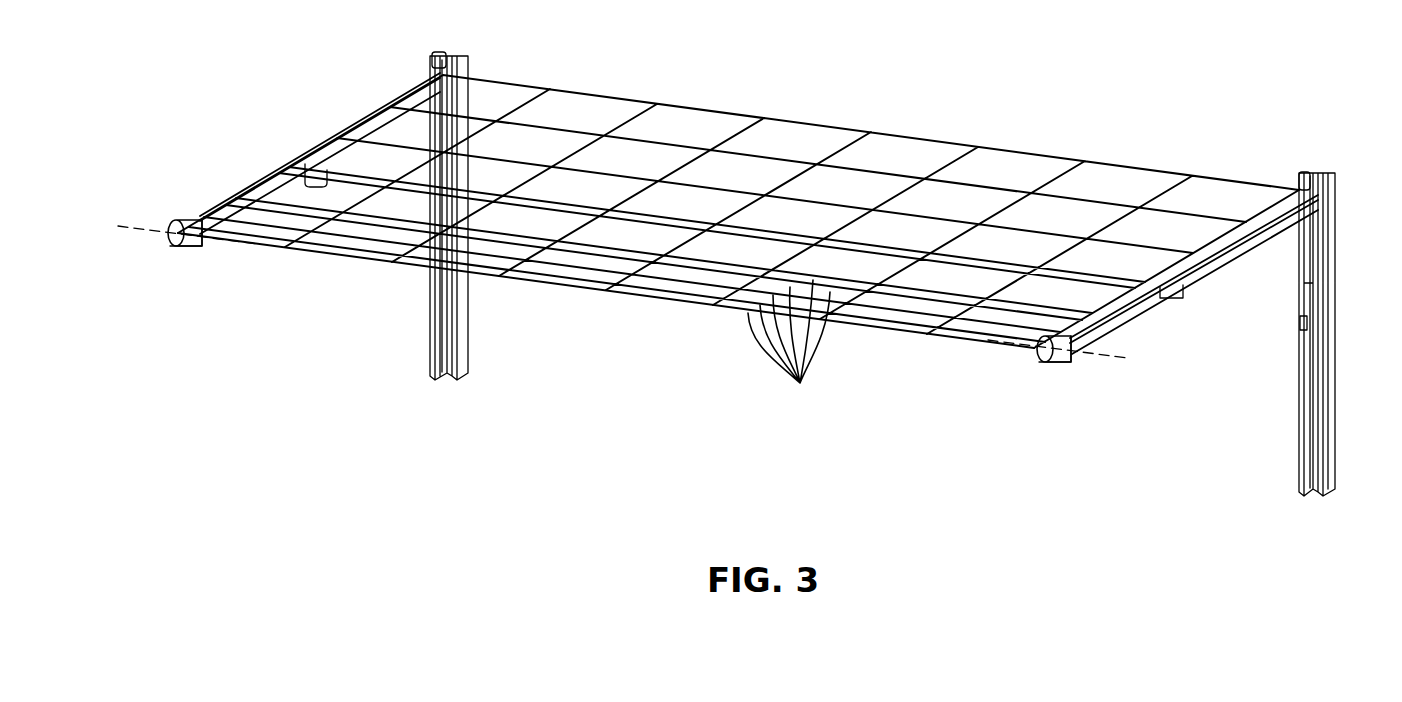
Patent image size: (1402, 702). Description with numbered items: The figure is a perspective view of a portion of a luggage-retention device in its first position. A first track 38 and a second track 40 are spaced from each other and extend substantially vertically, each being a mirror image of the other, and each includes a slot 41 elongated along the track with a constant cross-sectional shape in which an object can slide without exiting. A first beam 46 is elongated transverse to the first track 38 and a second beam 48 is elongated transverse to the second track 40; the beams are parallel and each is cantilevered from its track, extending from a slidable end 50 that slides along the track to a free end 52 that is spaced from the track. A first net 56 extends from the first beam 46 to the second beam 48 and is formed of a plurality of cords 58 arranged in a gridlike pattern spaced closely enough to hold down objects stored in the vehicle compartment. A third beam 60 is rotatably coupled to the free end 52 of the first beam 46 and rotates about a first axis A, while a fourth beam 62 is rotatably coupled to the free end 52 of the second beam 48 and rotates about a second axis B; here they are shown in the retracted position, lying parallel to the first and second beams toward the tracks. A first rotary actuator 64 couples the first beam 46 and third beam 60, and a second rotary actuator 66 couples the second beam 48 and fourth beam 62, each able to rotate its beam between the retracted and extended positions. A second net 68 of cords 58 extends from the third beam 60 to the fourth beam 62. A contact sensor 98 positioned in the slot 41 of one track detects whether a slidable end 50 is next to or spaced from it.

The first track 38 is at (428, 318).
The second track 40 is at (1338, 272).
The slot 41 is at (448, 346).
The first beam 46 is at (353, 110).
The second beam 48 is at (1242, 250).
The slidable end 50 is at (412, 78).
The free end 52 is at (182, 218).
The first net 56 is at (816, 122).
The cords 58 is at (789, 348).
The third beam 60 is at (323, 163).
The fourth beam 62 is at (1157, 300).
The first rotary actuator 64 is at (185, 248).
The second rotary actuator 66 is at (1050, 362).
The second net 68 is at (660, 300).
The contact sensor 98 is at (1300, 323).
The first axis A is at (143, 240).
The second axis B is at (1105, 362).